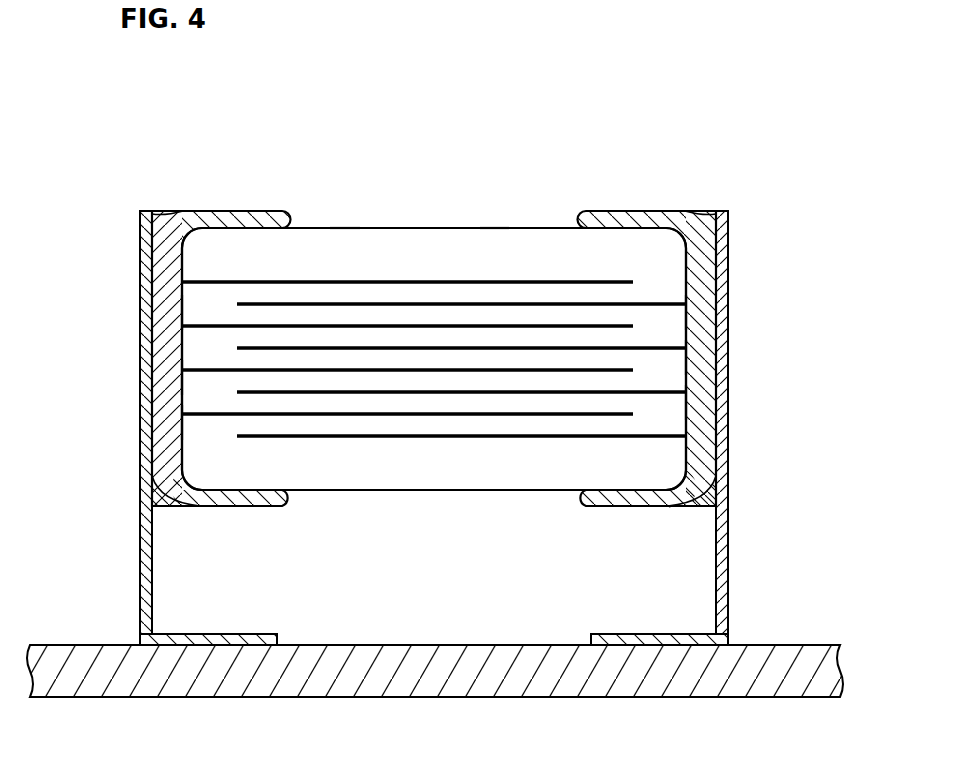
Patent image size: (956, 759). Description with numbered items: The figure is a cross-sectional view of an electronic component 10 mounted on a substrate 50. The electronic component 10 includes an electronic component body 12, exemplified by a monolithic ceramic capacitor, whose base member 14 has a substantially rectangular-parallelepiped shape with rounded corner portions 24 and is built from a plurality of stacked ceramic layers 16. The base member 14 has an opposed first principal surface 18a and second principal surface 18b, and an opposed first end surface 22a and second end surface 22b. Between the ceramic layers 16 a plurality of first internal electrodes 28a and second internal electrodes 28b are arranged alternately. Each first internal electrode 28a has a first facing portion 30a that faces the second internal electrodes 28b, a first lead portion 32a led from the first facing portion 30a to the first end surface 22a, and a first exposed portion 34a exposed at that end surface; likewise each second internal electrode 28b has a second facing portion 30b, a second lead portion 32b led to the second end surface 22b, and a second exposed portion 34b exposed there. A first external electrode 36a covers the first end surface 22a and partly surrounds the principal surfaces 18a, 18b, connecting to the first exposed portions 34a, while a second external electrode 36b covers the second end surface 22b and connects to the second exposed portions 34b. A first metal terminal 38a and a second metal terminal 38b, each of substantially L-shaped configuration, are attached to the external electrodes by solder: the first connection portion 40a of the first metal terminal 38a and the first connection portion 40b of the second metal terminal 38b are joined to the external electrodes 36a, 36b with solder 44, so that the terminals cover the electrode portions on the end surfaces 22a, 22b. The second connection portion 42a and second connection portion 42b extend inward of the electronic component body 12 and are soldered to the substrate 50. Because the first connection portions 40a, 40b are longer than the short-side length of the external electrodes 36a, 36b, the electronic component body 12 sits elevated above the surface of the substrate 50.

The electronic component 10 is at (207, 208).
The electronic component body 12 is at (313, 226).
The base member 14 is at (343, 227).
The ceramic layers 16 is at (420, 338).
The first principal surface 18a is at (493, 227).
The second principal surface 18b is at (375, 492).
The first end surface 22a is at (178, 312).
The second end surface 22b is at (690, 313).
The corner portions 24 is at (433, 380).
The first internal electrodes 28a is at (297, 285).
The second internal electrodes 28b is at (592, 433).
The first facing portion 30a is at (433, 370).
The second facing portion 30b is at (457, 347).
The first lead portion 32a is at (197, 420).
The second lead portion 32b is at (672, 395).
The first exposed portion 34a is at (187, 378).
The second exposed portion 34b is at (680, 355).
The first external electrode 36a is at (240, 211).
The second external electrode 36b is at (622, 210).
The first metal terminal 38a is at (140, 216).
The second metal terminal 38b is at (728, 218).
The first connection portion 40a is at (147, 292).
The first connection portion 40b is at (722, 260).
The second connection portion 42a is at (240, 634).
The second connection portion 42b is at (610, 634).
The solder 44 is at (157, 478).
The substrate 50 is at (63, 645).